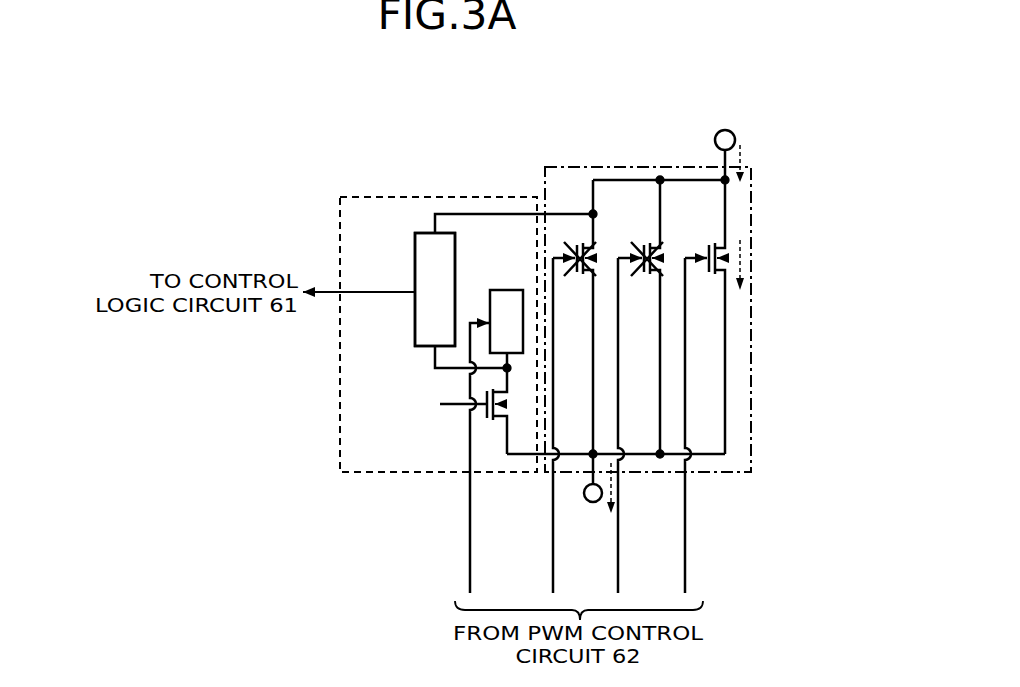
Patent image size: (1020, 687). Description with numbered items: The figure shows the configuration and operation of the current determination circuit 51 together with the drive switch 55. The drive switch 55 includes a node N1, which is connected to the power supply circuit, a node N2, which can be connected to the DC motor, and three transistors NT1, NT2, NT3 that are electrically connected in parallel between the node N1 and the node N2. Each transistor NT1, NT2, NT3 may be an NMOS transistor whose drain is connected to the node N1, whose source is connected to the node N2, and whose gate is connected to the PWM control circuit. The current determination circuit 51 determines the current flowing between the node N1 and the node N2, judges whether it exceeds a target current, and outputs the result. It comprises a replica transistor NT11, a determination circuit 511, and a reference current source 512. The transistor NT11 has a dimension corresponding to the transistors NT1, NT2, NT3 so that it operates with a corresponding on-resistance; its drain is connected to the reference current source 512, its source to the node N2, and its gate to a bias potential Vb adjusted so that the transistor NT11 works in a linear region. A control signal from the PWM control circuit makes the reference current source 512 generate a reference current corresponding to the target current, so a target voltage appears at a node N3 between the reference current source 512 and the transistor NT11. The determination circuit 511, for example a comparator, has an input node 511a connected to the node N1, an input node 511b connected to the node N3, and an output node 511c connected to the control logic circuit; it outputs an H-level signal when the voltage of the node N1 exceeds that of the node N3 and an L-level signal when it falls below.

The current determination circuit 51 is at (367, 196).
The determination circuit 511 is at (412, 318).
The input node 511a is at (419, 229).
The input node 511b is at (410, 338).
The output node 511c is at (410, 257).
The reference current source 512 is at (506, 288).
The drive switch 55 is at (569, 166).
The transistor NT1 is at (707, 238).
The transistor NT2 is at (642, 238).
The transistor NT3 is at (575, 240).
The replica transistor NT11 is at (490, 428).
The node N1 is at (741, 131).
The node N2 is at (593, 508).
The node N3 is at (515, 370).
The bias potential Vb is at (447, 405).